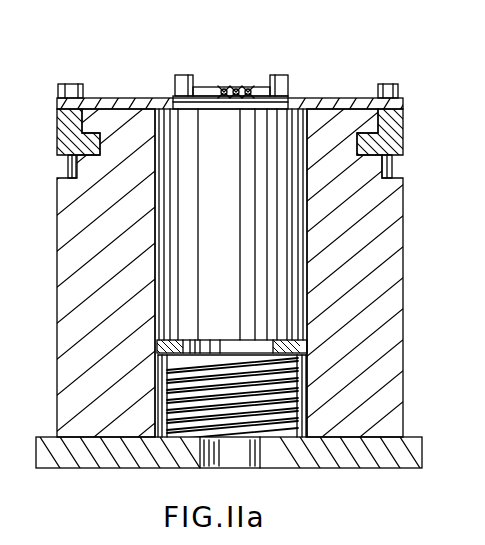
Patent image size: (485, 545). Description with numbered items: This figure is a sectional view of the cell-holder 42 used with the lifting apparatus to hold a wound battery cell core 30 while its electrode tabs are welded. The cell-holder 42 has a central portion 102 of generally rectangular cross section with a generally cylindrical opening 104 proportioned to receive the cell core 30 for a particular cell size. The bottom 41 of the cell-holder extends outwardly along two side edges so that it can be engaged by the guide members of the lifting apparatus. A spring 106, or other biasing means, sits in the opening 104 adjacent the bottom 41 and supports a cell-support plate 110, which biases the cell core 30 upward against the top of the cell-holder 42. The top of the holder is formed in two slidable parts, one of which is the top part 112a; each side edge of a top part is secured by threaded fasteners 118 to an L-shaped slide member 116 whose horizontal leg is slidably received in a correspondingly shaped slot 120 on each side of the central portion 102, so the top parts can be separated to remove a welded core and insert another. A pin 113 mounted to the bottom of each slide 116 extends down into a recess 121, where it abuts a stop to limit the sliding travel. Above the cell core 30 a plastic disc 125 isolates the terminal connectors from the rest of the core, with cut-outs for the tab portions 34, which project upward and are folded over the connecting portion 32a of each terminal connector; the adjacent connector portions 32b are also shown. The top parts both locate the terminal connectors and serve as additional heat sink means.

The central portion 102 is at (385, 241).
The bottom 41 is at (392, 453).
The cell-holder 42 is at (330, 80).
The top part 112a is at (123, 98).
The plastic disc 125 is at (197, 99).
The posts 32b is at (183, 75).
The connecting portion 32a is at (272, 86).
The tab portions 34 is at (250, 84).
The threaded fasteners 118 is at (68, 84).
The L-shaped slide member 116 is at (57, 142).
The slot 120 is at (83, 133).
The pin 113 is at (68, 167).
The recess 121 is at (57, 183).
The cylindrical opening 104 is at (300, 268).
The cell core 30 is at (160, 263).
The cell-support plate 110 is at (305, 343).
The spring 106 is at (300, 368).